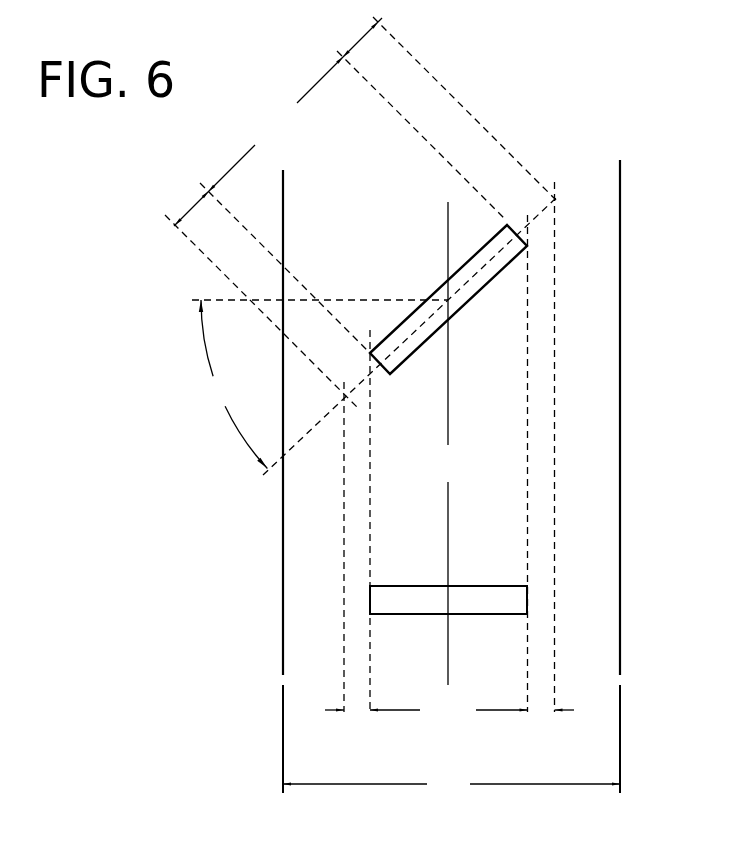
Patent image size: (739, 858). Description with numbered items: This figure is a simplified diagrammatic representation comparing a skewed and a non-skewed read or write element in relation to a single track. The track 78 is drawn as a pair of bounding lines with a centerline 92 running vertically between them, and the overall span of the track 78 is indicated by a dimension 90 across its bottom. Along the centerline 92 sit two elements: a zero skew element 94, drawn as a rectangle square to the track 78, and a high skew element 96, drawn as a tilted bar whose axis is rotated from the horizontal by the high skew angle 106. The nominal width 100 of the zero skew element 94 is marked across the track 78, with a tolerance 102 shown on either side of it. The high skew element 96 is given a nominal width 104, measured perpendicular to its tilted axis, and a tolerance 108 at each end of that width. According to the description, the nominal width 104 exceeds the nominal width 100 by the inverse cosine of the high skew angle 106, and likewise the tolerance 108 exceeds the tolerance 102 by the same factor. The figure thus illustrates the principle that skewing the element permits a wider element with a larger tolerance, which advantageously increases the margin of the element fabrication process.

The track 78 is at (620, 215).
The housing width 90 is at (451, 741).
The centerline 92 is at (449, 528).
The zero skew element 94 is at (470, 585).
The high skew element 96 is at (467, 303).
The nominal width 100 is at (449, 711).
The tolerance 102 is at (357, 714).
The nominal width 104 is at (360, 364).
The high skew angle 106 is at (232, 384).
The tolerance 108 is at (369, 35).